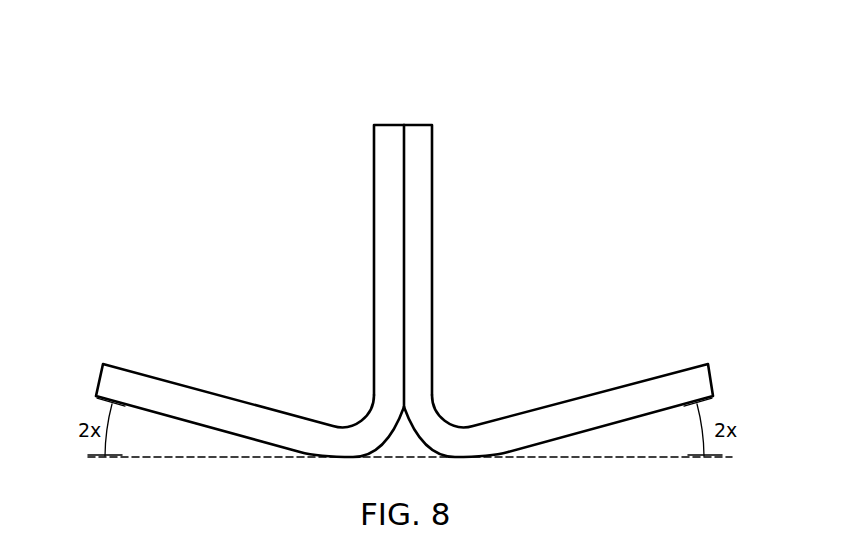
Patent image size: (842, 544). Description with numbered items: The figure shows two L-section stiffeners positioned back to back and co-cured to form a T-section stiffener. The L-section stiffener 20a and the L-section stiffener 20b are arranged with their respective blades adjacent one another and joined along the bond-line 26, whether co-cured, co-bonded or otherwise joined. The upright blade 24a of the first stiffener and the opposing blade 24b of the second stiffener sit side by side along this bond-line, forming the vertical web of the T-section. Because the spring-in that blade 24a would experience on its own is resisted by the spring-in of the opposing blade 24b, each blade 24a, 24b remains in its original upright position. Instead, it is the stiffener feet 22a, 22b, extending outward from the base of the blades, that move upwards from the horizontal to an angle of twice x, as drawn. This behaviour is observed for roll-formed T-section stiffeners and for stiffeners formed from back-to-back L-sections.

The L-section stiffener 20a is at (345, 118).
The L-section stiffener 20b is at (450, 120).
The stiffener foot 22a is at (188, 405).
The stiffener foot 22b is at (605, 405).
The blade 24a is at (387, 247).
The blade 24b is at (423, 232).
The bond-line 26 is at (398, 108).